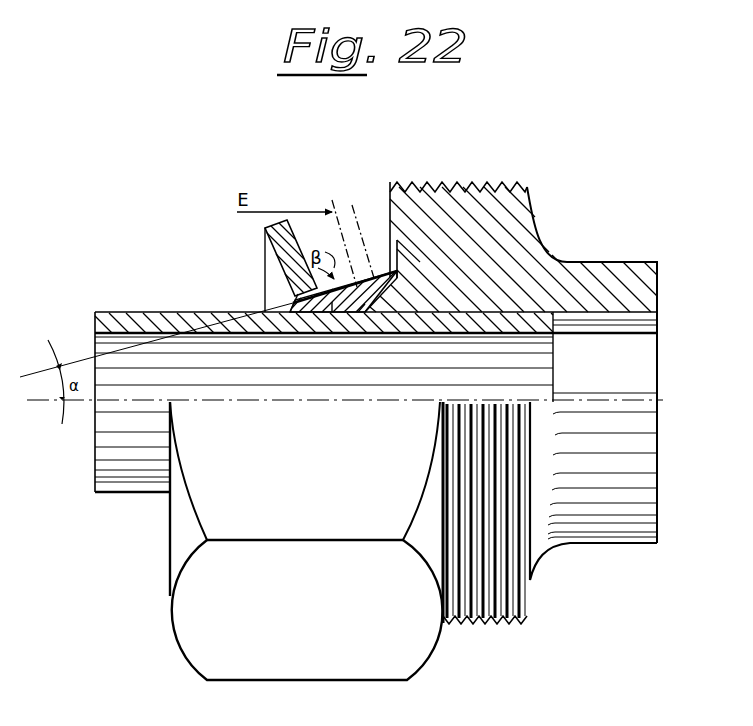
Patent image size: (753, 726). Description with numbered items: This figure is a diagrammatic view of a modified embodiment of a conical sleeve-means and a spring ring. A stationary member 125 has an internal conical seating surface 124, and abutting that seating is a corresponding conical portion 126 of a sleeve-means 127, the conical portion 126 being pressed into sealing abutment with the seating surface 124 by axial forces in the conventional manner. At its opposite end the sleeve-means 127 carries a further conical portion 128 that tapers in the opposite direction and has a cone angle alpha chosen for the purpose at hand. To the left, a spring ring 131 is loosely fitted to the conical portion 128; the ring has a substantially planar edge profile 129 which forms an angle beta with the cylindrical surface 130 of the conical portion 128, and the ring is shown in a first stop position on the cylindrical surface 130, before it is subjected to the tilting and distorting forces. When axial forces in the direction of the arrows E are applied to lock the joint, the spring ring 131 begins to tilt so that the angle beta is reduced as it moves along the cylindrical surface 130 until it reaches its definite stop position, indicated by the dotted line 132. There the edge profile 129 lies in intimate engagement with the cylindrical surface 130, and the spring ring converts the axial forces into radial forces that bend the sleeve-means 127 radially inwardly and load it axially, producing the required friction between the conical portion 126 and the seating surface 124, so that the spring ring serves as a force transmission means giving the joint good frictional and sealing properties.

The internal conical seating surface 124 is at (455, 278).
The stationary member 125 is at (464, 197).
The conical portion 126 is at (400, 285).
The sleeve-means 127 is at (382, 268).
The further conical portion 128 is at (420, 318).
The edge profile 129 is at (298, 294).
The cylindrical surface 130 is at (332, 302).
The spring ring 131 is at (283, 250).
The dotted line 132 is at (333, 238).